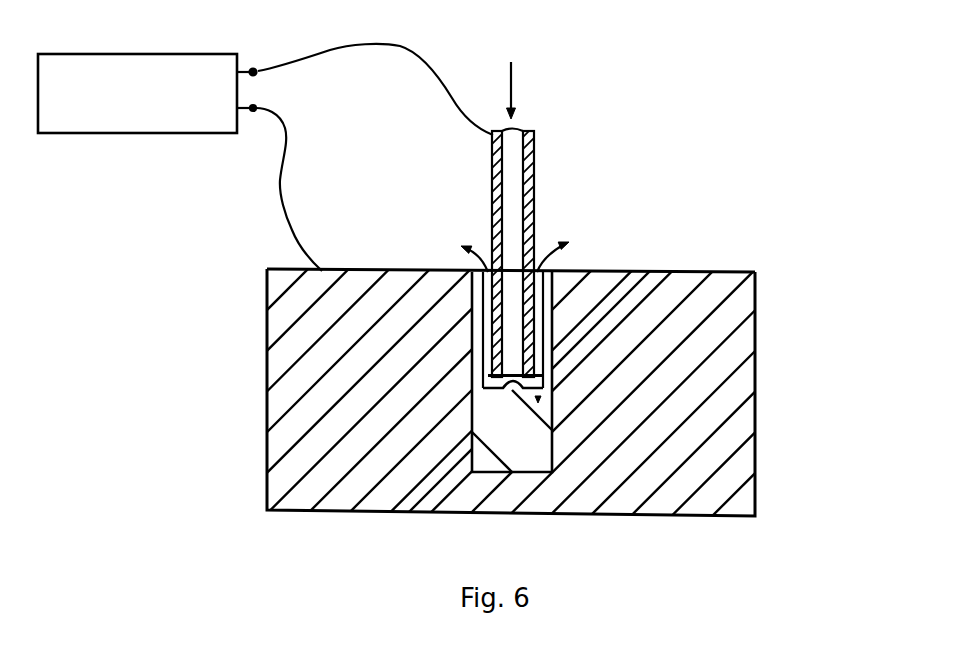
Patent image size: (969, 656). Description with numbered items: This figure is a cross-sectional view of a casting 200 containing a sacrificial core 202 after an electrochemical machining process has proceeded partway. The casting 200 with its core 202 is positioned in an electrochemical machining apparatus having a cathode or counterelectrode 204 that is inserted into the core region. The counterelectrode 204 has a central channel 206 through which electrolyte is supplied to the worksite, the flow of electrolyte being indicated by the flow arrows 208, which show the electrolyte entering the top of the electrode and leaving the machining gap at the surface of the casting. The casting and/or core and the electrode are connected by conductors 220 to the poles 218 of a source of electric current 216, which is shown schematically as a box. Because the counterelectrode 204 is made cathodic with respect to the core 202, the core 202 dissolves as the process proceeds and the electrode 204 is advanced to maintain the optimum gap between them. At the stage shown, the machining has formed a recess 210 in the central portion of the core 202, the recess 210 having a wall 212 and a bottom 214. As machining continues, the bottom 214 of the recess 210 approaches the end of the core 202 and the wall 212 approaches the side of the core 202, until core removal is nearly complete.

The casting 200 is at (755, 421).
The sacrificial core 202 is at (660, 273).
The counterelectrode 204 is at (490, 142).
The central channel 206 is at (547, 328).
The flow arrows 208 is at (511, 93).
The recess 210 is at (498, 379).
The wall 212 is at (483, 318).
The bottom 214 is at (497, 394).
The source of electric current 216 is at (133, 109).
The poles 218 is at (253, 71).
The conductors 220 is at (327, 57).